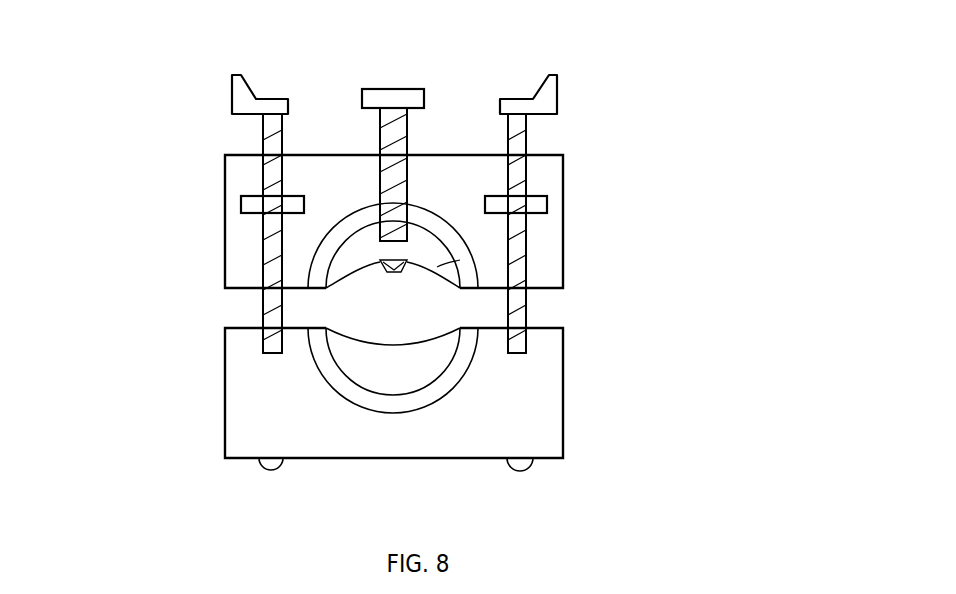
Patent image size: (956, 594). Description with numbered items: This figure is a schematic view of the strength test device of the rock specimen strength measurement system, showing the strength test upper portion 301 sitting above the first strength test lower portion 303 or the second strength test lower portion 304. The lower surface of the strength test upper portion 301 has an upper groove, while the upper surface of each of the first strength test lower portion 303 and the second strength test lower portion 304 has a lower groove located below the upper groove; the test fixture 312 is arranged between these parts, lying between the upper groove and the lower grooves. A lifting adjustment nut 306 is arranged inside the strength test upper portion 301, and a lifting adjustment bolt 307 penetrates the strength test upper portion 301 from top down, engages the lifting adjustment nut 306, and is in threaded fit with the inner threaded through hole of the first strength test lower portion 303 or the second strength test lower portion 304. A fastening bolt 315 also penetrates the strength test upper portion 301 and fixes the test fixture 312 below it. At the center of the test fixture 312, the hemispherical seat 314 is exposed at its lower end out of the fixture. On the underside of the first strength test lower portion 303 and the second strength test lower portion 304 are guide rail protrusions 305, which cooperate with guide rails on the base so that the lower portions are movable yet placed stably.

The strength test upper portion 301 is at (563, 155).
The first strength test lower portion 303 is at (511, 369).
The second strength test lower portion 304 is at (563, 328).
The guide rail protrusion 305 is at (528, 460).
The lifting adjustment nut 306 is at (547, 203).
The lifting adjustment bolt 307 is at (510, 99).
The test fixture 312 is at (437, 267).
The hemispherical seat 314 is at (390, 272).
The fastening bolt 315 is at (393, 89).